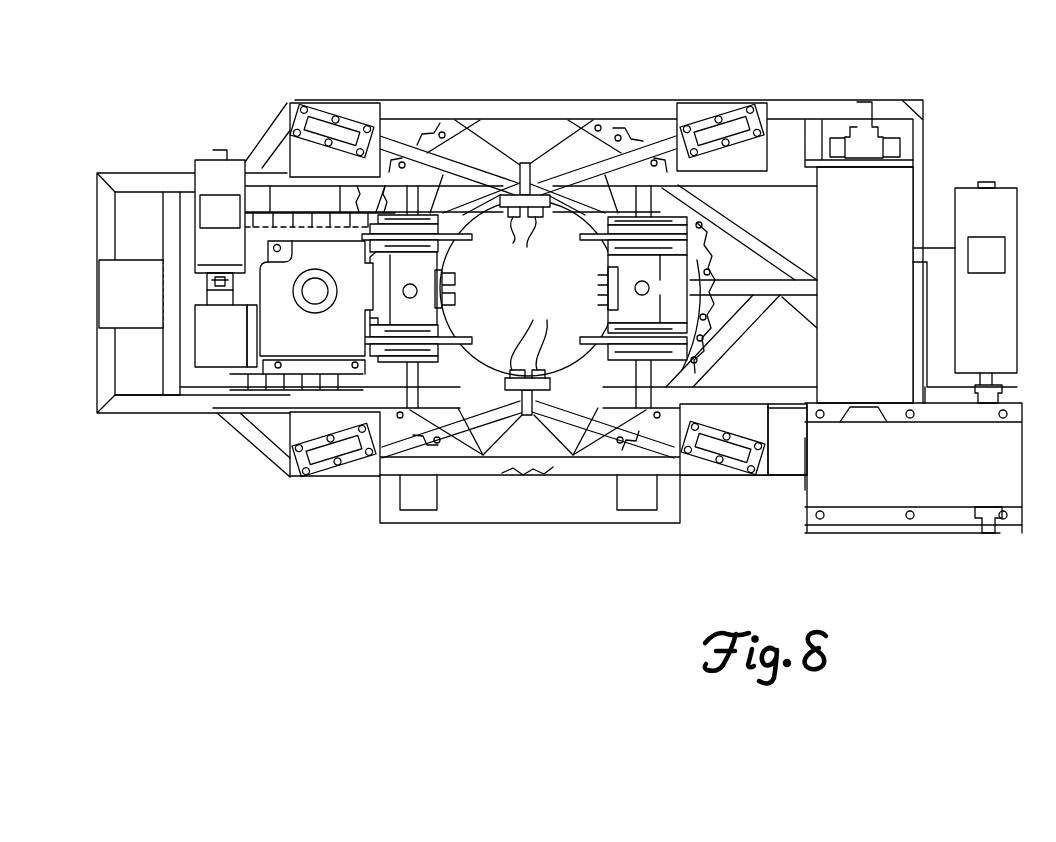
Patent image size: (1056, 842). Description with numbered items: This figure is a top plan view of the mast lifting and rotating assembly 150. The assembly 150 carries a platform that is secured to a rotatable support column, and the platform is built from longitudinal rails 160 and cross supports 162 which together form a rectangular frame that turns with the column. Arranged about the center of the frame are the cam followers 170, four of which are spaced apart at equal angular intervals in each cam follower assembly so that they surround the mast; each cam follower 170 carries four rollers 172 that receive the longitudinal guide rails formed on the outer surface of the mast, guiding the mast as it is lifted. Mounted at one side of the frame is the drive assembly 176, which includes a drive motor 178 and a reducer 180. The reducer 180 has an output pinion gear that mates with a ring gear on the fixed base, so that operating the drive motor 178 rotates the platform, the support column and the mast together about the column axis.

The assembly for lifting and rotating the mast 150 is at (738, 56).
The longitudinal rails 160 is at (268, 178).
The cross supports 162 is at (103, 222).
The cam follower 170 is at (533, 192).
The rollers 172 is at (598, 297).
The drive assembly 176 is at (205, 370).
The drive motor 178 is at (208, 163).
The reducer 180 is at (290, 325).